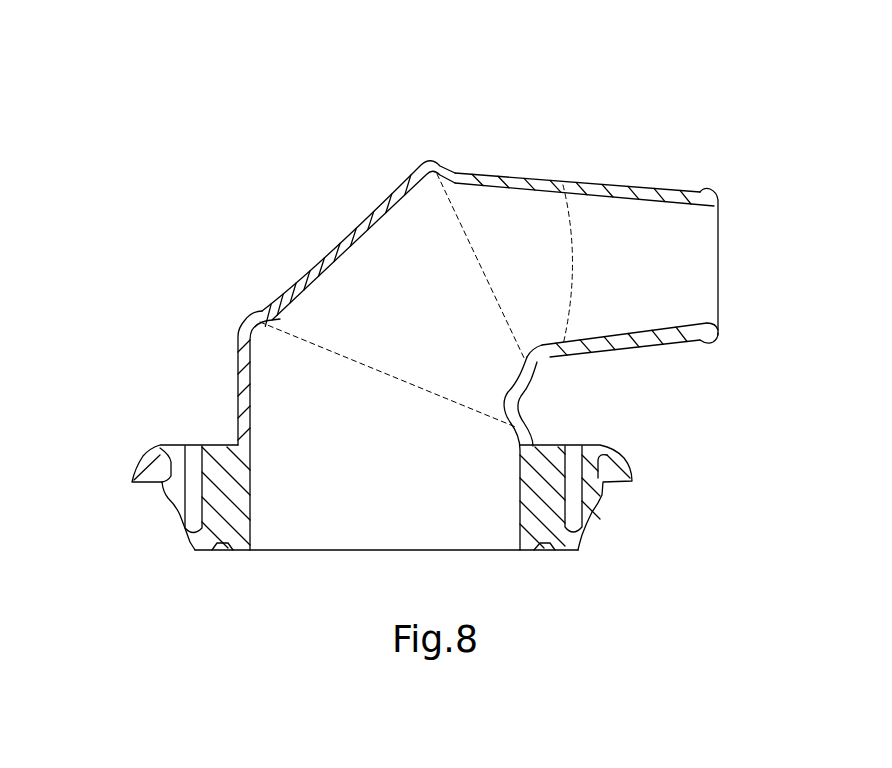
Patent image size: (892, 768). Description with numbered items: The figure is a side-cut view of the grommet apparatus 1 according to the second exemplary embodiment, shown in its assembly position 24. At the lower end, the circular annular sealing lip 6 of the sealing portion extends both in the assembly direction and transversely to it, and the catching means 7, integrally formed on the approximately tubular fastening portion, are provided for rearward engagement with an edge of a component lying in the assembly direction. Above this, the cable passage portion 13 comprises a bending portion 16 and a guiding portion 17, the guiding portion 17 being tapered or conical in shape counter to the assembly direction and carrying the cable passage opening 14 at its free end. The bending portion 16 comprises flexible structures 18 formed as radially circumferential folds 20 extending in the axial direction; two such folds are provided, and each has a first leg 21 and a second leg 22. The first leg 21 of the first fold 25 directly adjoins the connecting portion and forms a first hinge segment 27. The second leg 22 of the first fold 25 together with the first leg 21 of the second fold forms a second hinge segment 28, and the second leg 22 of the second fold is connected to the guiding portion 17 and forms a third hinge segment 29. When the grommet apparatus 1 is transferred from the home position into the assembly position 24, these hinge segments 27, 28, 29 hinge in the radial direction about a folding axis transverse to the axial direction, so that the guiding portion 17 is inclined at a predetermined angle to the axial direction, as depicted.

The grommet apparatus 1 is at (90, 80).
The sealing lip 6 is at (617, 454).
The catching means 7 is at (603, 503).
The cable passage portion 13 is at (523, 145).
The cable passage opening 14 is at (694, 268).
The bending portion 16 is at (363, 233).
The guiding portion 17 is at (653, 187).
The flexible structures 18 is at (218, 330).
The folds 20 is at (195, 250).
The first leg 21 is at (401, 182).
The second leg 22 is at (313, 280).
The assembly position 24 is at (652, 88).
The first fold 25 is at (330, 358).
The first hinge segment 27 is at (315, 403).
The second hinge segment 28 is at (397, 290).
The third hinge segment 29 is at (530, 232).